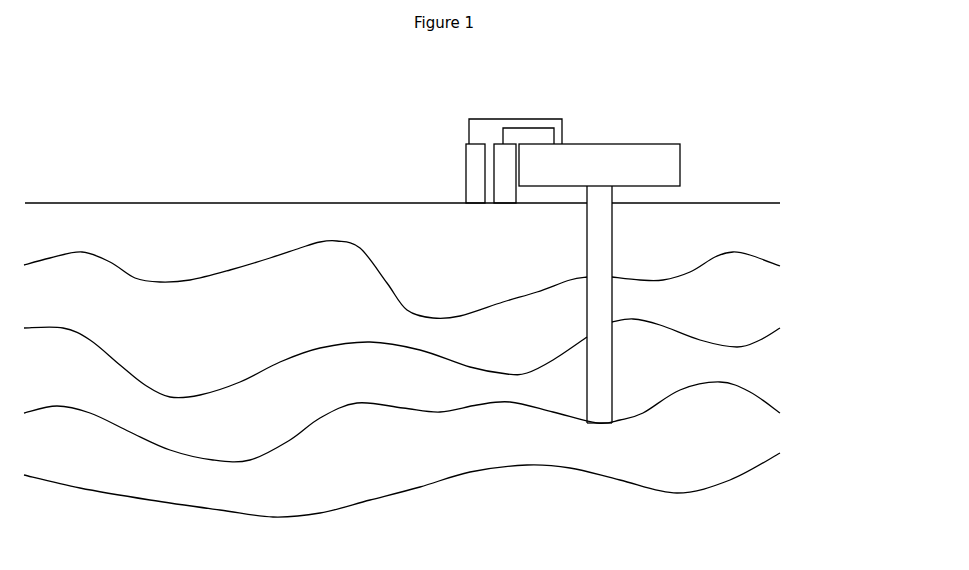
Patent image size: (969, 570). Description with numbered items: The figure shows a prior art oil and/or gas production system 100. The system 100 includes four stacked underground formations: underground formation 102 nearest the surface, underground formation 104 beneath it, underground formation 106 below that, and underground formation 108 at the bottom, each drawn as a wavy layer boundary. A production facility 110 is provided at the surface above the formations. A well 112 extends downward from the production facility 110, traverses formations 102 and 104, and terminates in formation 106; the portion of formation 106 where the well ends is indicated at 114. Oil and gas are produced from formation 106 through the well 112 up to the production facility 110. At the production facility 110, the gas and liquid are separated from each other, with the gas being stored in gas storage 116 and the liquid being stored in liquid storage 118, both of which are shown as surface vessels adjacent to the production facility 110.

The prior art system 100 is at (328, 103).
The underground formation 102 is at (402, 277).
The underground formation 104 is at (402, 343).
The underground formation 106 is at (402, 404).
The underground formation 108 is at (402, 463).
The production facility 110 is at (599, 165).
The well 112 is at (612, 224).
The portion of formation 114 is at (570, 395).
The gas storage 116 is at (502, 162).
The liquid storage 118 is at (477, 161).